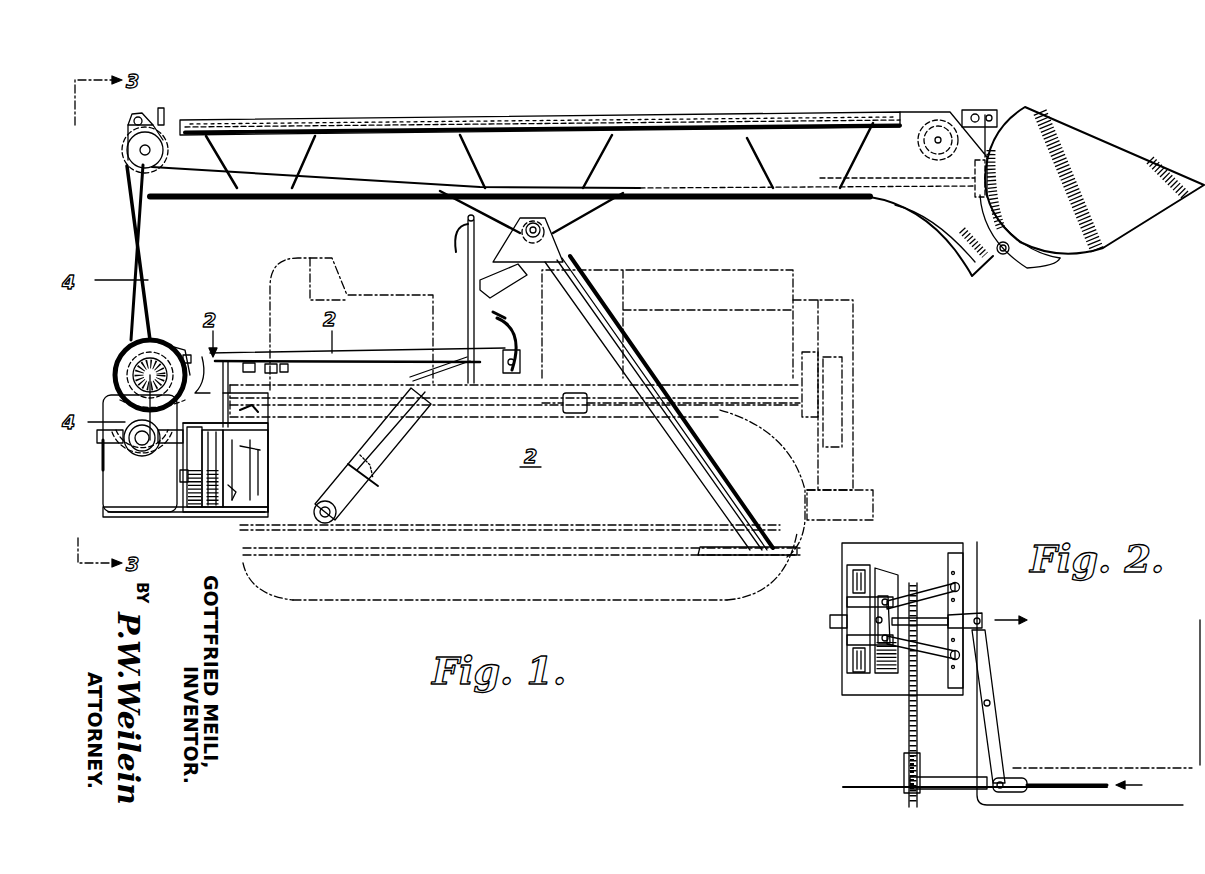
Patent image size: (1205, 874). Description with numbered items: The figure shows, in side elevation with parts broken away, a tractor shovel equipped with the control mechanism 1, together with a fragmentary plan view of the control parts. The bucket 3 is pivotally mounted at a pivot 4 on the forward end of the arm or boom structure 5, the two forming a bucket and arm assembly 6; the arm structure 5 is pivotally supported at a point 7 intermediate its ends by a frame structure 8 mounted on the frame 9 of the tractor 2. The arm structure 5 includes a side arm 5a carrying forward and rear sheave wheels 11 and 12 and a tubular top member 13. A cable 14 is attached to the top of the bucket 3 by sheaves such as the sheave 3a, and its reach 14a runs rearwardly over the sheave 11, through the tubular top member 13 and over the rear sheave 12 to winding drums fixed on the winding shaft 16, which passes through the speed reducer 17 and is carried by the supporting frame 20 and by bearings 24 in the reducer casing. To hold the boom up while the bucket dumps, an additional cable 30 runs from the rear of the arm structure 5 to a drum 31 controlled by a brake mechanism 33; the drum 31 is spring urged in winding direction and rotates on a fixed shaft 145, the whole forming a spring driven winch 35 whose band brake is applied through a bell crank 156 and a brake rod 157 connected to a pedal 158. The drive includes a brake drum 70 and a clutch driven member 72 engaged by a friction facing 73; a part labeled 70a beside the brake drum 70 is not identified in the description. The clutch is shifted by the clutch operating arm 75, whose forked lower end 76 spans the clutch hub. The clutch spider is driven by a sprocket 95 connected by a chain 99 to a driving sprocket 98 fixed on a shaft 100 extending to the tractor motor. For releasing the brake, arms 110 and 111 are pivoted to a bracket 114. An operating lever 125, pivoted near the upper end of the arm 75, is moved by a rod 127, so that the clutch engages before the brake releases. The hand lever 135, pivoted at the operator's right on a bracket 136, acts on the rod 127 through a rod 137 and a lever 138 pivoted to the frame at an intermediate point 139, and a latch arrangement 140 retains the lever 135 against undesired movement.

In FIG. 1, the control mechanism 1 is at (98, 489).
In FIG. 1, the tractor 2 is at (551, 429).
In FIG. 1, the bucket 3 is at (1110, 150).
In FIG. 1, the sheave 3a is at (972, 110).
In FIG. 1, the pivot 4 is at (1002, 256).
In FIG. 1, the arm or boom structure 5 is at (678, 116).
In FIG. 1, the side arm 5a is at (363, 125).
In FIG. 1, the bucket and arm assembly 6 is at (583, 115).
In FIG. 1, the pivot point 7 is at (548, 232).
In FIG. 1, the frame structure 8 is at (587, 282).
In FIG. 1, the tractor frame 9 is at (587, 526).
In FIG. 1, the sheave wheel 11 is at (923, 117).
In FIG. 1, the sheave wheel 12 is at (165, 124).
In FIG. 1, the tubular top member 13 is at (835, 111).
In FIG. 1, the cable 14 is at (125, 191).
In FIG. 1, the cable reach 14a is at (508, 124).
In FIG. 1, the winding shaft 16 is at (133, 452).
In FIG. 1, the speed reducer 17 is at (150, 512).
In FIG. 1, the supporting frame 20 is at (130, 520).
In FIG. 1, the bearings 24 is at (140, 457).
In FIG. 1, the cable 30 is at (130, 322).
In FIG. 1, the drum 31 is at (128, 380).
In FIG. 1, the brake mechanism 33 is at (118, 352).
In FIG. 1, the spring driven winch 35 is at (108, 358).
In FIG. 1, the brake drum 70 is at (188, 497).
In FIG. 2, the brake drum 70 is at (847, 575).
In FIG. 1, the motor shaft 70a is at (182, 476).
In FIG. 2, the motor shaft 70a is at (852, 566).
In FIG. 1, the driven member 72 is at (205, 511).
In FIG. 2, the driven member 72 is at (884, 580).
In FIG. 1, the friction facing 73 is at (228, 512).
In FIG. 1, the clutch operating lever 75 is at (250, 422).
In FIG. 1, the forked lower end 76 is at (242, 451).
In FIG. 1, the sprocket 95 is at (233, 498).
In FIG. 2, the sprocket 95 is at (912, 590).
In FIG. 2, the driving sprocket 98 is at (910, 800).
In FIG. 2, the chain 99 is at (908, 735).
In FIG. 2, the shaft 100 is at (955, 777).
In FIG. 2, the arm 110 is at (924, 655).
In FIG. 2, the arm 111 is at (935, 585).
In FIG. 2, the bracket 114 is at (955, 680).
In FIG. 1, the operating lever 125 is at (232, 382).
In FIG. 1, the rod 127 is at (240, 358).
In FIG. 2, the rod 127 is at (975, 615).
In FIG. 1, the hand lever 135 is at (467, 268).
In FIG. 1, the bracket 136 is at (498, 361).
In FIG. 1, the rod 137 is at (367, 345).
In FIG. 2, the rod 137 is at (1075, 783).
In FIG. 1, the lever 138 is at (241, 452).
In FIG. 2, the lever 138 is at (998, 733).
In FIG. 2, the pivot point 139 is at (990, 703).
In FIG. 1, the latch arrangement 140 is at (440, 367).
In FIG. 1, the shaft 145 is at (163, 340).
In FIG. 1, the bell crank 156 is at (202, 357).
In FIG. 1, the brake rod 157 is at (402, 339).
In FIG. 1, the pedal 158 is at (502, 317).